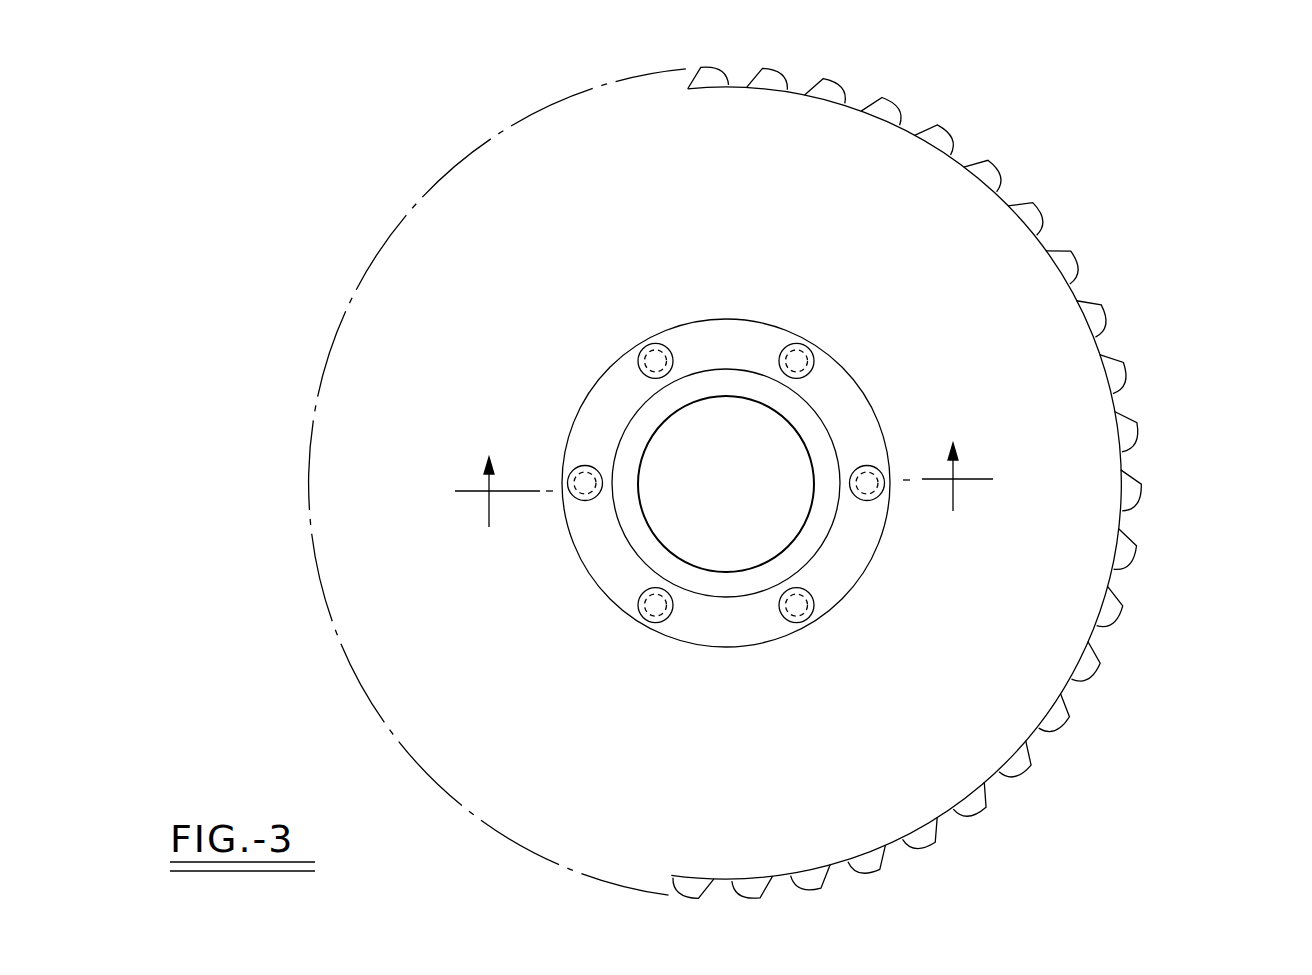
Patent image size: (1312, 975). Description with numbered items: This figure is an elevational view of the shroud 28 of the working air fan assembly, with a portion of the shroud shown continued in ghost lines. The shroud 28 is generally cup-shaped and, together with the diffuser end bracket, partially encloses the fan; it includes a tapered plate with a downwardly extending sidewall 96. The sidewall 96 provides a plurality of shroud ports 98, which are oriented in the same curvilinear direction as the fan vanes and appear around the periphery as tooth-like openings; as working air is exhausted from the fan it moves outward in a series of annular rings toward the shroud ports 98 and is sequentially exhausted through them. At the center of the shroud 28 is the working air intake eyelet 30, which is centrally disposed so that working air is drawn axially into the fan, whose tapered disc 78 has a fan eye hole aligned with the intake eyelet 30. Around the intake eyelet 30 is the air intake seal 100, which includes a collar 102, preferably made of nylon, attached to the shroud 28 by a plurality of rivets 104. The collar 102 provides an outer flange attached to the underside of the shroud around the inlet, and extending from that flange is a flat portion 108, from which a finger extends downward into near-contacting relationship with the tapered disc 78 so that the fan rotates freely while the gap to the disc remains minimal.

The shroud 28 is at (1155, 446).
The working air intake eyelet 30 is at (723, 417).
The tapered disc 78 is at (993, 322).
The sidewall 96 is at (1007, 197).
The shroud ports 98 is at (898, 106).
The air intake seal 100 is at (736, 645).
The collar 102 is at (818, 540).
The rivets 104 is at (645, 348).
The flat portion 108 is at (817, 425).